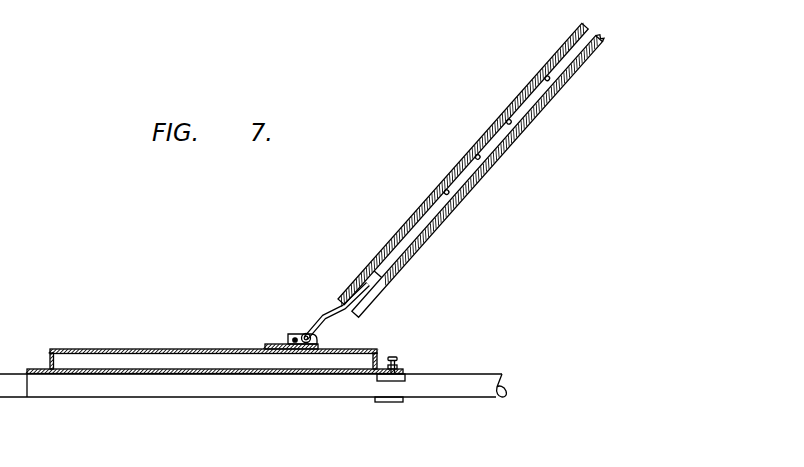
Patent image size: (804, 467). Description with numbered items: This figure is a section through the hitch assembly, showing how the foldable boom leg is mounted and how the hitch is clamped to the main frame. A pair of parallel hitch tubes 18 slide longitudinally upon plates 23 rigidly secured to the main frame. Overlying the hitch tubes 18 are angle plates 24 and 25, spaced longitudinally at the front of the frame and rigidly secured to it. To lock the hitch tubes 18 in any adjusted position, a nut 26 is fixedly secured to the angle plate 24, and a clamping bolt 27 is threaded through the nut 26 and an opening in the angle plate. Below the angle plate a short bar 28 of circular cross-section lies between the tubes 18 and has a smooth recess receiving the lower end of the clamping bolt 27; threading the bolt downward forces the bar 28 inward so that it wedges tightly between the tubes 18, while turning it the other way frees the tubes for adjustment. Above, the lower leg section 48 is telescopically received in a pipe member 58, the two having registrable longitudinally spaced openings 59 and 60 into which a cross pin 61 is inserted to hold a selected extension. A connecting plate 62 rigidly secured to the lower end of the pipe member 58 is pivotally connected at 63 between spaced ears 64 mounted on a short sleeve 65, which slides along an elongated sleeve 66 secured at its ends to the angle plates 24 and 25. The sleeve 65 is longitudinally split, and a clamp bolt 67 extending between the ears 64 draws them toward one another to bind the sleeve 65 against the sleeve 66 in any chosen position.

The hitch tubes 18 is at (457, 398).
The plates 23 is at (389, 402).
The angle plate 24 is at (378, 352).
The angle plate 25 is at (48, 362).
The nut 26 is at (403, 372).
The clamping bolt 27 is at (397, 358).
The bar 28 is at (405, 379).
The leg section 48 is at (471, 170).
The pipe member 58 is at (486, 132).
The openings 59 is at (545, 74).
The openings 60 is at (458, 206).
The cross pin 61 is at (521, 136).
The connecting plate 62 is at (332, 311).
The pivotal connection 63 is at (306, 333).
The ears 64 is at (320, 339).
The short sleeve 65 is at (268, 345).
The elongated sleeve 66 is at (142, 349).
The clamp bolt 67 is at (294, 338).